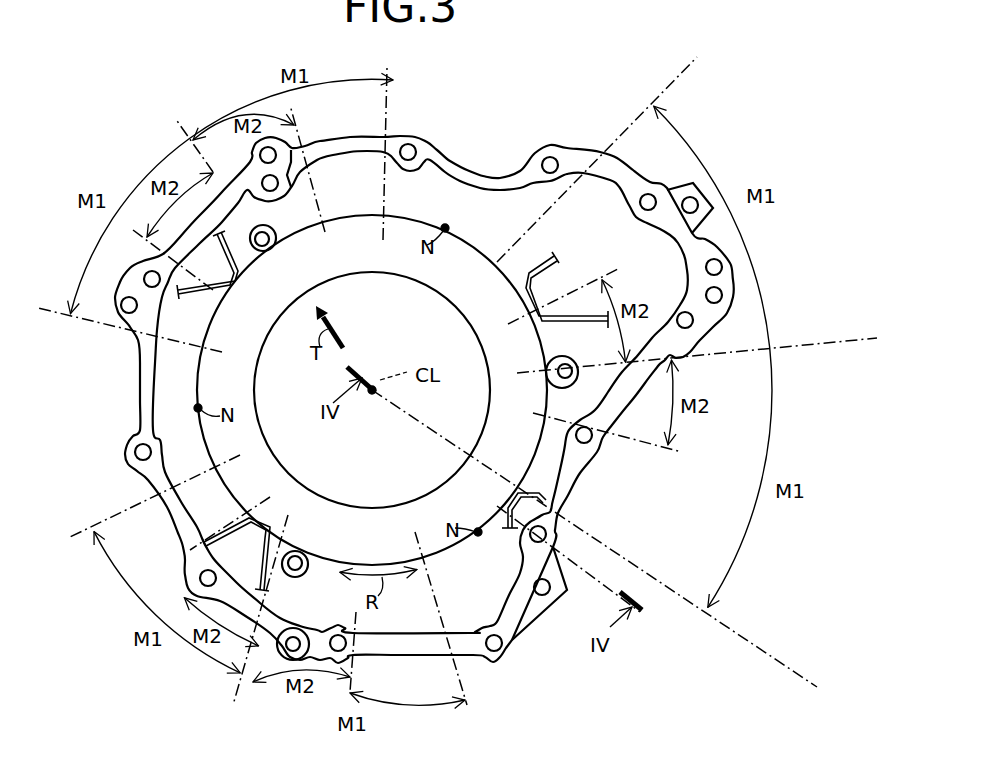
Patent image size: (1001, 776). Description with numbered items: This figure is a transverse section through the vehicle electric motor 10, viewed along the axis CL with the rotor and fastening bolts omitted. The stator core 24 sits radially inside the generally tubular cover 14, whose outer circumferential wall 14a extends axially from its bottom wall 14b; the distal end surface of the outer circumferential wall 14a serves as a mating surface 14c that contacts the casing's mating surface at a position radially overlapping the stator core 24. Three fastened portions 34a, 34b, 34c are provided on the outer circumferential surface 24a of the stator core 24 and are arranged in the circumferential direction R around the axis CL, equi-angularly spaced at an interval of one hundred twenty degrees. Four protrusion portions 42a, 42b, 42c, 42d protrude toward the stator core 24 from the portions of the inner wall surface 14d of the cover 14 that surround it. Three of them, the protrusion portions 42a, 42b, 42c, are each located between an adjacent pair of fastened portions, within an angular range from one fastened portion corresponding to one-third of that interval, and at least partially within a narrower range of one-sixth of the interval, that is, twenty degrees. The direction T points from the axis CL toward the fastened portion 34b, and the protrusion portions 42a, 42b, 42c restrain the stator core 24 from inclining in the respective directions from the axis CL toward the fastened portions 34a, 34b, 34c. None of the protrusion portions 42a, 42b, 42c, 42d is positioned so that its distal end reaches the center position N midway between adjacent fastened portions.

The vehicle electric motor 10 is at (745, 107).
The casing cover 14 is at (508, 117).
The outer circumferential wall 14a is at (447, 164).
The bottom wall 14b is at (490, 219).
The mating surface 14c is at (132, 446).
The inner wall surface 14d is at (188, 298).
The stator core 24 is at (334, 288).
The outer circumferential surface 24a is at (333, 218).
The fastened portion 34a is at (298, 576).
The fastened portion 34b is at (271, 227).
The fastened portion 34c is at (567, 361).
The protrusion portion 42a is at (260, 531).
The protrusion portion 42b is at (229, 291).
The protrusion portion 42c is at (522, 292).
The protrusion portion 42d is at (508, 518).